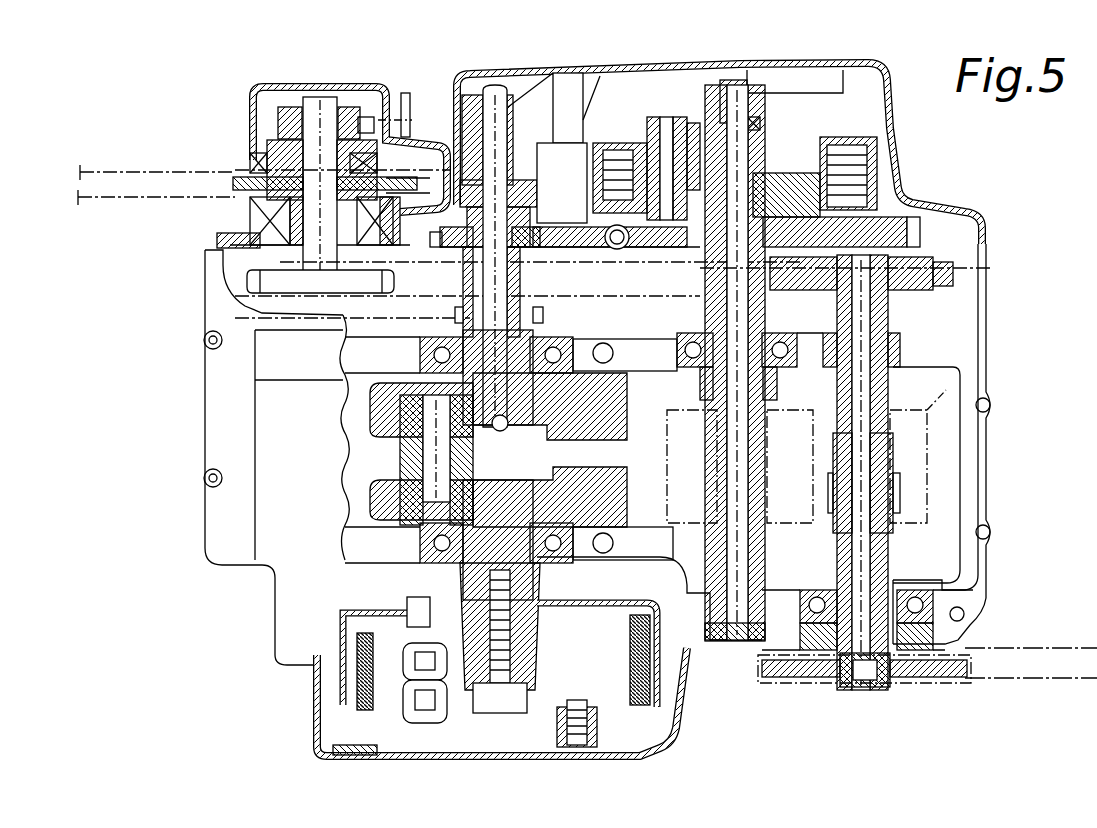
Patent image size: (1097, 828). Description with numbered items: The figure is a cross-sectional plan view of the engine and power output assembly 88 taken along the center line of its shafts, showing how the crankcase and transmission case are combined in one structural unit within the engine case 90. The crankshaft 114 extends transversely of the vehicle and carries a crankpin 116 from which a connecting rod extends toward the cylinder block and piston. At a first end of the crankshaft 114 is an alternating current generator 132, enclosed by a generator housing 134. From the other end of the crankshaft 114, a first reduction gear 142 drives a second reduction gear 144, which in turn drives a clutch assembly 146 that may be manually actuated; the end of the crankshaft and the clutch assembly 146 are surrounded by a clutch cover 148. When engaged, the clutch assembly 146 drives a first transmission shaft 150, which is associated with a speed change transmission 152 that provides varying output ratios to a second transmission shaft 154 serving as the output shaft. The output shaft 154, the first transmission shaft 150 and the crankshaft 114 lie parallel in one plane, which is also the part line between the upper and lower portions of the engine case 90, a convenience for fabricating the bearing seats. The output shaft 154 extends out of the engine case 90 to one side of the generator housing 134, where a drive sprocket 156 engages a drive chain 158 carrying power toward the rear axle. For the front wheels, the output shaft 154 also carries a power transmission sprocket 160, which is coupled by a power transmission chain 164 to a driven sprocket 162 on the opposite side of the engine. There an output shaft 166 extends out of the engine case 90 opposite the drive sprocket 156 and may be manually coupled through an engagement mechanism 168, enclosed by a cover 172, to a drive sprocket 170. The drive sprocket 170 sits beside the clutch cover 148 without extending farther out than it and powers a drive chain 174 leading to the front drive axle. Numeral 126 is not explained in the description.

The engine and power output assembly 88 is at (262, 676).
The engine case 90 is at (277, 580).
The crankshaft 114 is at (470, 280).
The crankpin 116 is at (463, 460).
The snap ring 126 is at (547, 312).
The alternating current generator 132 is at (673, 727).
The generator housing 134 is at (587, 745).
The first reduction gear 142 is at (537, 253).
The second reduction gear 144 is at (670, 245).
The clutch assembly 146 is at (853, 140).
The clutch cover 148 is at (803, 63).
The first transmission shaft 150 is at (763, 570).
The speed change transmission 152 is at (946, 390).
The second transmission shaft 154 is at (888, 555).
The drive sprocket 156 is at (808, 678).
The drive chain 158 is at (1030, 667).
The power transmission sprocket 160 is at (937, 265).
The driven sprocket 162 is at (252, 282).
The power transmission chain 164 is at (635, 277).
The output shaft 166 is at (320, 103).
The engagement mechanism 168 is at (277, 115).
The drive sprocket 170 is at (237, 170).
The cover 172 is at (383, 90).
The drive chain 174 is at (163, 141).